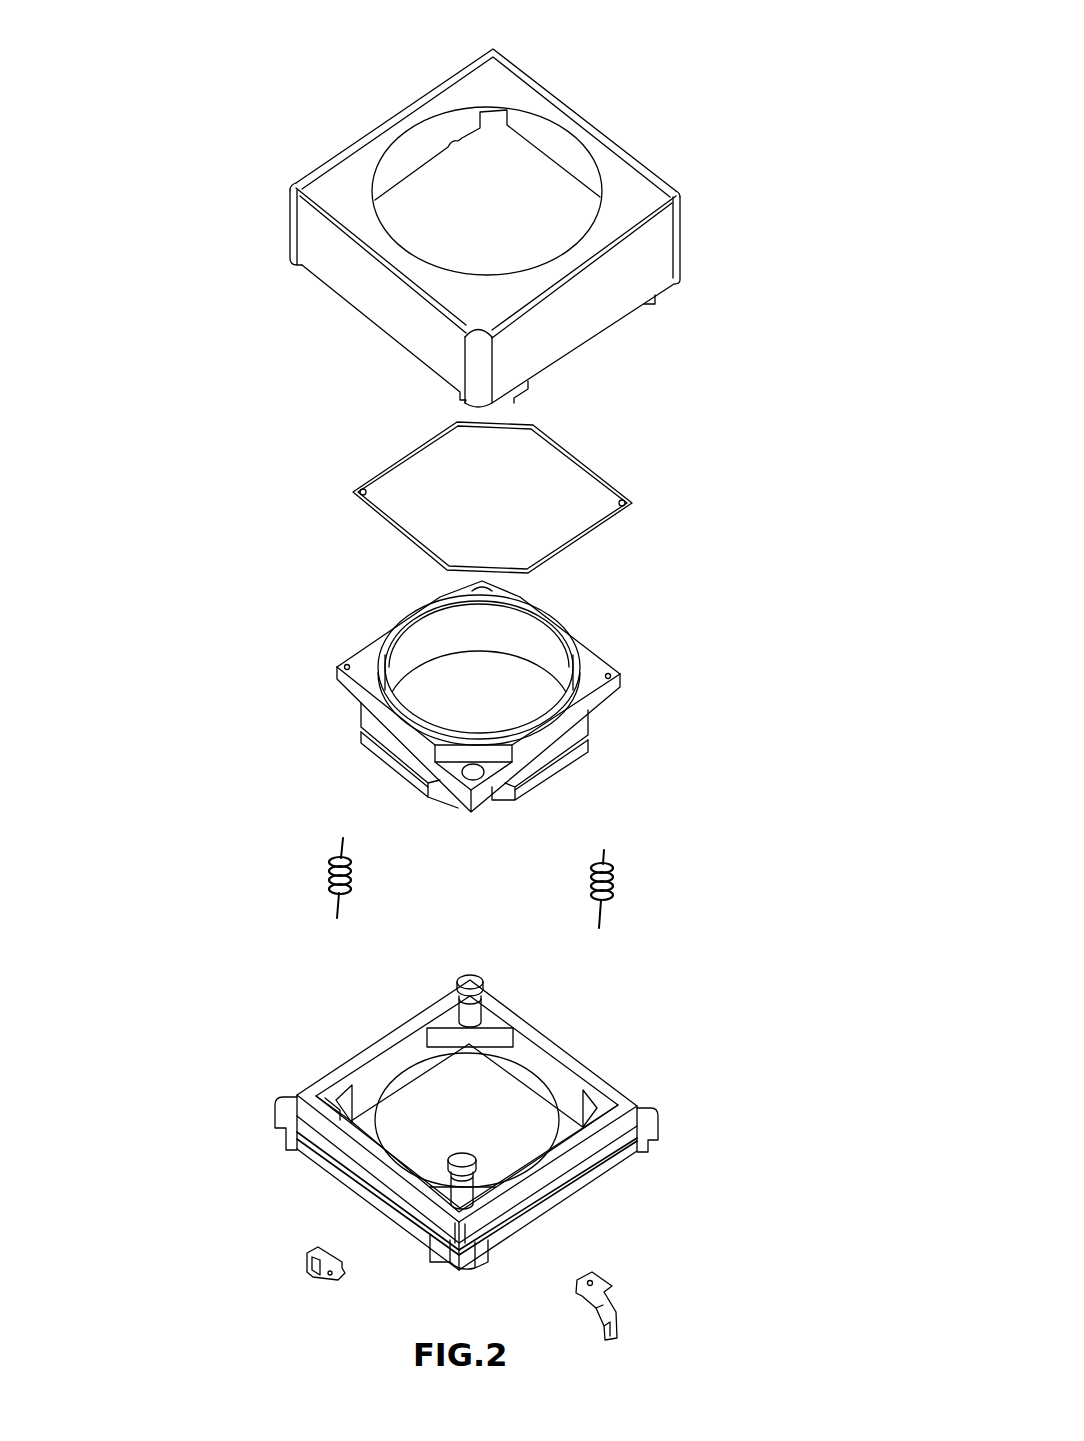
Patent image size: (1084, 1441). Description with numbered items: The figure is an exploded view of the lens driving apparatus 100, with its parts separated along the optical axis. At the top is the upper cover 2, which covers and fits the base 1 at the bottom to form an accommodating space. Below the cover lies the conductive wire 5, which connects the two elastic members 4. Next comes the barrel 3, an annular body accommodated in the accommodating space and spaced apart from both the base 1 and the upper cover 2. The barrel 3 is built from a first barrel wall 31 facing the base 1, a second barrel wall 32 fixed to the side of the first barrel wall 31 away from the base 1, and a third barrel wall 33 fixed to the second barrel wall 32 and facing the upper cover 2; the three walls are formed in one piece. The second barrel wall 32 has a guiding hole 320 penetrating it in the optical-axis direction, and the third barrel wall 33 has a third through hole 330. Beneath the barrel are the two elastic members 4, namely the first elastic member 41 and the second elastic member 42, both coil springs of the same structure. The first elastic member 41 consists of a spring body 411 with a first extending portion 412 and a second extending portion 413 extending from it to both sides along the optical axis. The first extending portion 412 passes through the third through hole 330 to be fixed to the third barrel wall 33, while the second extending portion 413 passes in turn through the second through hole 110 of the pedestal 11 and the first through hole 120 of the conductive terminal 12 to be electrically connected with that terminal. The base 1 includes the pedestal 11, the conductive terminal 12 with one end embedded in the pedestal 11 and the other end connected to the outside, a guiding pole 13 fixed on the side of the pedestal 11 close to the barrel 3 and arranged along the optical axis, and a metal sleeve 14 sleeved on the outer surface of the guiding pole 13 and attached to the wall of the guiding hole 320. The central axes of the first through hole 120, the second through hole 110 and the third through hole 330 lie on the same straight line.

The lens driving apparatus 100 is at (511, 23).
The upper cover 2 is at (647, 344).
The conductive wire 5 is at (602, 550).
The barrel 3 is at (688, 645).
The third barrel wall 33 is at (583, 677).
The second barrel wall 32 is at (572, 737).
The first barrel wall 31 is at (570, 757).
The third through hole 330 is at (343, 663).
The guiding hole 320 is at (460, 772).
The elastic members 4 is at (742, 807).
The second elastic member 42 is at (370, 880).
The first elastic member 41 is at (698, 843).
The spring body 411 is at (612, 882).
The first extending portion 412 is at (603, 860).
The second extending portion 413 is at (603, 918).
The base 1 is at (755, 937).
The pedestal 11 is at (600, 1088).
The guiding pole 13 is at (473, 983).
The metal sleeve 14 is at (475, 1013).
The second through hole 110 is at (332, 1105).
The conductive terminal 12 is at (625, 1290).
The first through hole 120 is at (325, 1278).